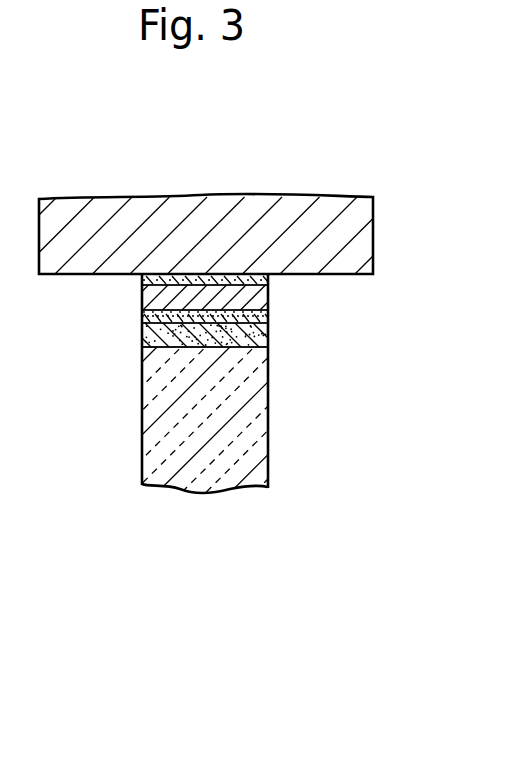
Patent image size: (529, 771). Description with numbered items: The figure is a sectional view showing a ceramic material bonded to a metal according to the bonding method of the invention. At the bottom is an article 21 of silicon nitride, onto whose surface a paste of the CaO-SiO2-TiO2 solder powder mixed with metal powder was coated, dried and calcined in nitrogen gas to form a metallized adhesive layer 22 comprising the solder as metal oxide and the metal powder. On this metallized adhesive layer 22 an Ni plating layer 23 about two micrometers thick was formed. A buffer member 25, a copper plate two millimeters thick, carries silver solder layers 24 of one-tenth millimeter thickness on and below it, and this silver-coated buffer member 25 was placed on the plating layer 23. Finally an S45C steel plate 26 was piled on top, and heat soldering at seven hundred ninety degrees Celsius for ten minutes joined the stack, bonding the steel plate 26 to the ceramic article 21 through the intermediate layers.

The article 21 is at (268, 428).
The metallized adhesive layer 22 is at (141, 335).
The Ni plating layer 23 is at (268, 317).
The silver solder layers 24 is at (141, 281).
The buffer member 25 is at (268, 295).
The S45C steel plate 26 is at (373, 228).